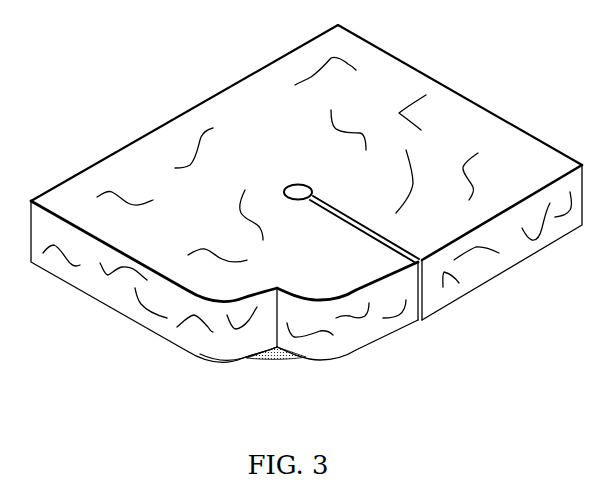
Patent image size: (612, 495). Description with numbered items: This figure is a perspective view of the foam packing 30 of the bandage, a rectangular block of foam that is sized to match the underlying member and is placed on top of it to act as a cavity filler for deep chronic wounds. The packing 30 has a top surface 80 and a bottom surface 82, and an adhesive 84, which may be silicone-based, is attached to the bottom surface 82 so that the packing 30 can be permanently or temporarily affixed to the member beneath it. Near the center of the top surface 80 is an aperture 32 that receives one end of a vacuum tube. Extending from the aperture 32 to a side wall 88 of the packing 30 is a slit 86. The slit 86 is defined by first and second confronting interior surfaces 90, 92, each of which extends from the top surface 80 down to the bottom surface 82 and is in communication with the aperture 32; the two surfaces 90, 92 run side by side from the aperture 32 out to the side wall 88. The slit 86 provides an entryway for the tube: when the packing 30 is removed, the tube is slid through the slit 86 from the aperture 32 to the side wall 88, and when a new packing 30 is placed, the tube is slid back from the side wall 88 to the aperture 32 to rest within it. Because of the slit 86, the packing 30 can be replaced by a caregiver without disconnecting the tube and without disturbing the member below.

The foam packing 30 is at (306, 213).
The aperture 32 is at (295, 184).
The top surface 80 is at (385, 60).
The bottom surface 82 is at (260, 358).
The adhesive 84 is at (277, 359).
The slit 86 is at (421, 322).
The side wall 88 is at (112, 302).
The first confronting interior surface 90 is at (377, 238).
The second confronting interior surface 92 is at (338, 213).